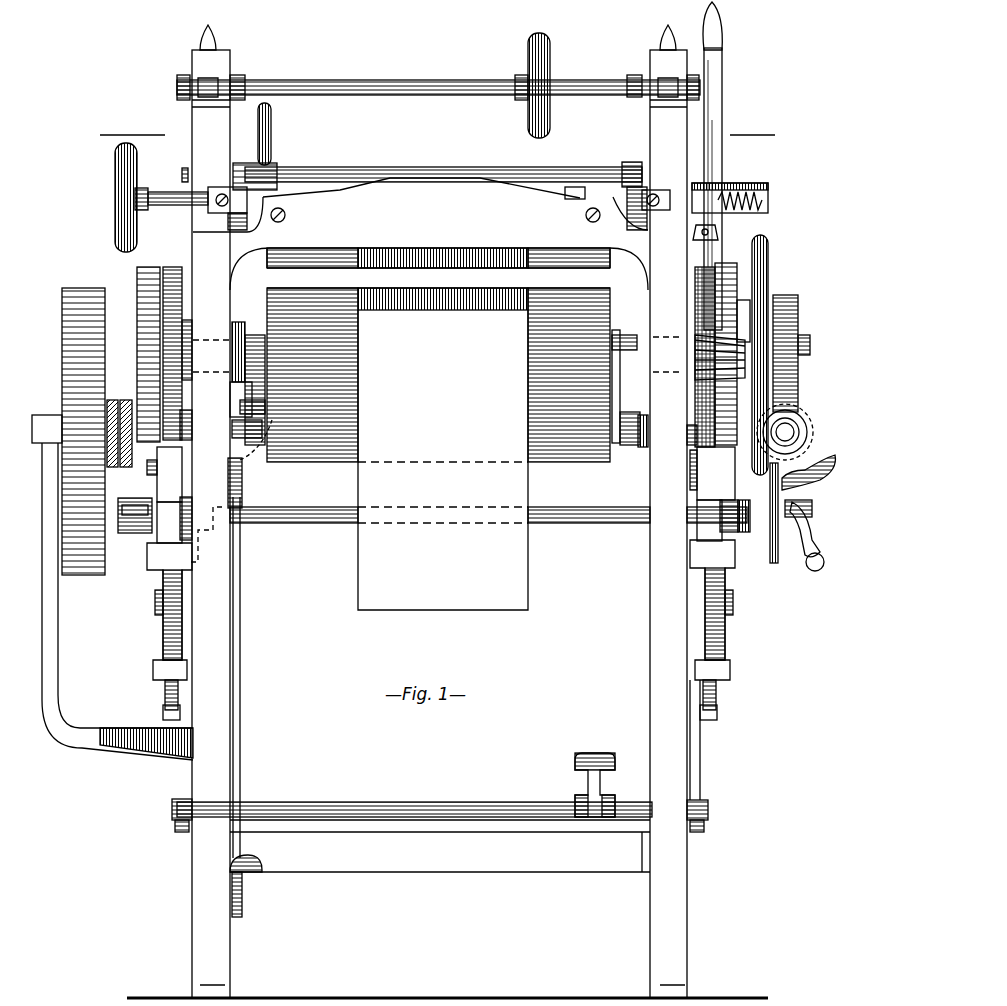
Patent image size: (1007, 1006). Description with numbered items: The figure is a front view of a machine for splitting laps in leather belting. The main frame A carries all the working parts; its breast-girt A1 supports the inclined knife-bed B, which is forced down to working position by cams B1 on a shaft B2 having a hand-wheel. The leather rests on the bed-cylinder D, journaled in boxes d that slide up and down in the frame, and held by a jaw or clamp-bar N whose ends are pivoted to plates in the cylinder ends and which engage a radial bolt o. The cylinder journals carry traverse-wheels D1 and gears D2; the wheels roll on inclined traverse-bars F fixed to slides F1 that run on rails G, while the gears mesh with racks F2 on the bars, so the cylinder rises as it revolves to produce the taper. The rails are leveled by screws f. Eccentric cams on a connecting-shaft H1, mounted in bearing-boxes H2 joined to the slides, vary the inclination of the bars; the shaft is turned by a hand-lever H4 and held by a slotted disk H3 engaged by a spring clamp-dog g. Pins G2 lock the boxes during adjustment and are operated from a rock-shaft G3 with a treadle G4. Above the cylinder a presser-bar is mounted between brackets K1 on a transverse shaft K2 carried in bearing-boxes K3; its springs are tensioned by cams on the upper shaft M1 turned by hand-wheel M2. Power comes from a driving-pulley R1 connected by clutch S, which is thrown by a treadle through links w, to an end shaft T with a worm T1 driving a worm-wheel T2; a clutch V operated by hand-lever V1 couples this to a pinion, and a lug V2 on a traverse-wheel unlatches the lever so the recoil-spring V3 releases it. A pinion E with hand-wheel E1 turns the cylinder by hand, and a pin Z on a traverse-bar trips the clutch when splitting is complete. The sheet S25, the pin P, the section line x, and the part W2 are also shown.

The main frame A is at (447, 511).
The breast-girt A1 is at (439, 257).
The shaft M1 is at (438, 79).
The hand-wheel M2 is at (545, 84).
The brackets K1 is at (437, 146).
The transverse shaft K2 is at (443, 173).
The bearing-boxes K3 is at (173, 167).
The knife-bed B is at (239, 209).
The cams B1 is at (628, 219).
The shaft B2 is at (161, 197).
The jaw or clamp-bar N is at (438, 277).
The roll or bed-cylinder D is at (491, 364).
The traverse-wheels D1 is at (177, 343).
The gears D2 is at (437, 344).
The boxes d is at (437, 376).
The sheet S25 is at (443, 460).
The driving-pulley R1 is at (83, 421).
The clutch S is at (119, 421).
The links w is at (403, 486).
The traverse-bars F is at (165, 462).
The supporting-slides F1 is at (439, 520).
The racks F2 is at (717, 473).
The connecting-shaft H1 is at (588, 520).
The bearing-boxes H2 is at (436, 530).
The slotted disk H3 is at (791, 526).
The hand-lever H4 is at (810, 546).
The rails or guideways G is at (163, 565).
The pins or bolts G2 is at (703, 756).
The rock-shaft G3 is at (412, 808).
The treadle G4 is at (595, 773).
The leveling-screws f is at (438, 701).
The radial bolt o is at (247, 399).
The pin or lug Z is at (232, 448).
The pin P is at (250, 464).
The pivot x is at (224, 522).
The clutch device V is at (744, 321).
The hand-lever V1 is at (721, 166).
The pin or lug V2 is at (687, 432).
The recoil-spring V3 is at (740, 211).
The pinion E is at (720, 357).
The hand-wheel E1 is at (770, 355).
The end shaft T is at (785, 432).
The worm T1 is at (810, 420).
The worm-wheel T2 is at (795, 353).
The spring clamp-dog g is at (809, 475).
The treadle rod head W2 is at (258, 886).